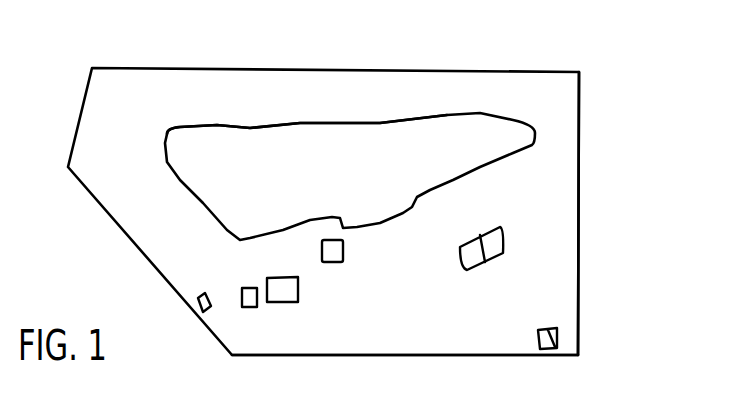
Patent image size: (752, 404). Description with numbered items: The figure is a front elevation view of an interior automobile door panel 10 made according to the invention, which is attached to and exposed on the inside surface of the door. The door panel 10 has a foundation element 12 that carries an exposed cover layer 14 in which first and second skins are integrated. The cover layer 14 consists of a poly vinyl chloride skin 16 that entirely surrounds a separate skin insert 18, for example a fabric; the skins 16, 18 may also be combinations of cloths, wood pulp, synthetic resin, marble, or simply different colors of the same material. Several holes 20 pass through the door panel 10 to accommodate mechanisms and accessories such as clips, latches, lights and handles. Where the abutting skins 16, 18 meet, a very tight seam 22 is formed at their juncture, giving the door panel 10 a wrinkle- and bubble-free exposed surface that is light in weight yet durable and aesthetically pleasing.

The door panel 10 is at (616, 193).
The foundation element 12 is at (490, 357).
The cover layer 14 is at (565, 290).
The skin 16 is at (465, 92).
The skin insert 18 is at (283, 173).
The holes 20 is at (267, 302).
The seam 22 is at (217, 126).